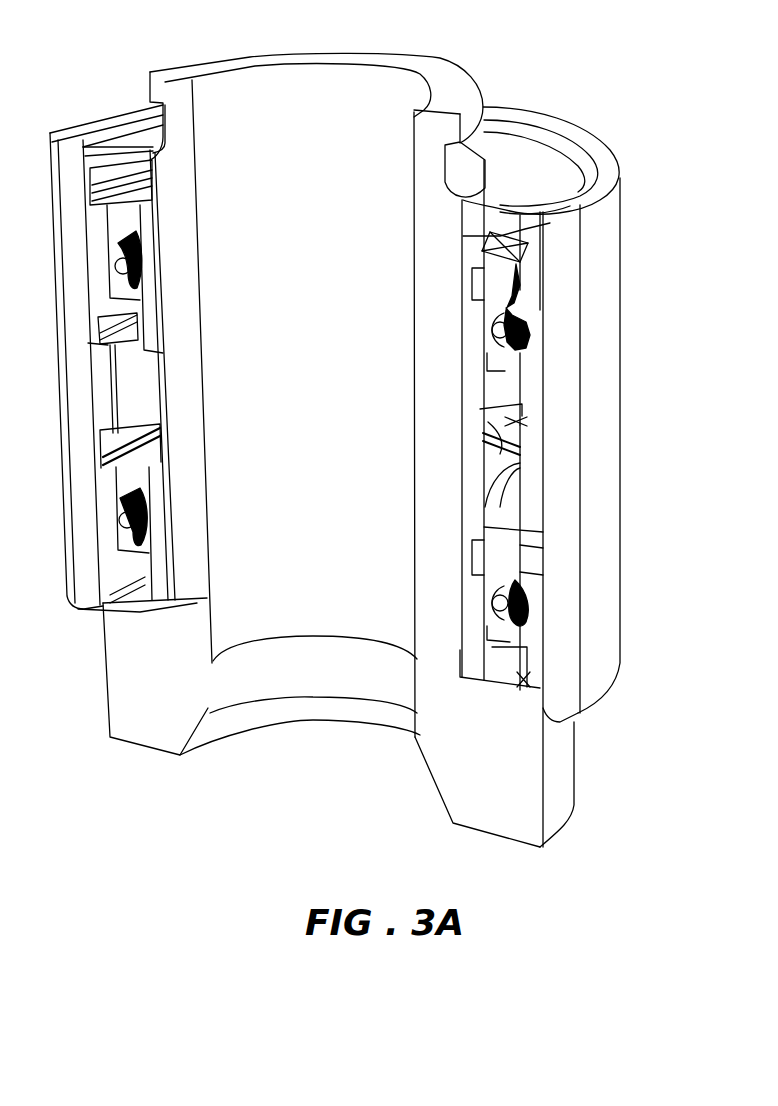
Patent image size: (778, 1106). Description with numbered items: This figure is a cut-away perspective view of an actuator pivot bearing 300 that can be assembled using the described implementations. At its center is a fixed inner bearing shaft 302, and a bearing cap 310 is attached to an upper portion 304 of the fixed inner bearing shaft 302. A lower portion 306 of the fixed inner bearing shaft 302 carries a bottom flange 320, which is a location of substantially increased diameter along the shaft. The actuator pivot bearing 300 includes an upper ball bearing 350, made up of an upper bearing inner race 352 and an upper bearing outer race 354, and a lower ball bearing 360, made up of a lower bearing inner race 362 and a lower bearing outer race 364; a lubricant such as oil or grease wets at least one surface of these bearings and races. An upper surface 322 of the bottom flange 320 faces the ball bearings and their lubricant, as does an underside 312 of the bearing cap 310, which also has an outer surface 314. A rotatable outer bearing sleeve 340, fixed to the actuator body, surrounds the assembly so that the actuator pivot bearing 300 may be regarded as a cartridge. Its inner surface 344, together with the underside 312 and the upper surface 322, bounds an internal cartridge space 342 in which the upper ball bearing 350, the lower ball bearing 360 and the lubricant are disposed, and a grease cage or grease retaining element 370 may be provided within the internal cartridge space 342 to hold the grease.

The actuator pivot bearing 300 is at (520, 70).
The fixed inner bearing shaft 302 is at (218, 90).
The upper portion 304 is at (186, 174).
The lower portion 306 is at (187, 693).
The bearing cap 310 is at (548, 230).
The underside 312 is at (523, 256).
The outer surface 314 is at (533, 197).
The bottom flange 320 is at (140, 617).
The upper surface 322 is at (508, 668).
The rotatable outer bearing sleeve 340 is at (545, 484).
The internal cartridge space 342 is at (520, 414).
The inner surface 344 is at (137, 395).
The upper ball bearing 350 is at (480, 323).
The upper bearing inner race 352 is at (470, 290).
The upper bearing outer race 354 is at (531, 300).
The lower ball bearing 360 is at (484, 603).
The lower bearing inner race 362 is at (476, 565).
The lower bearing outer race 364 is at (530, 572).
The grease retaining element 370 is at (128, 294).